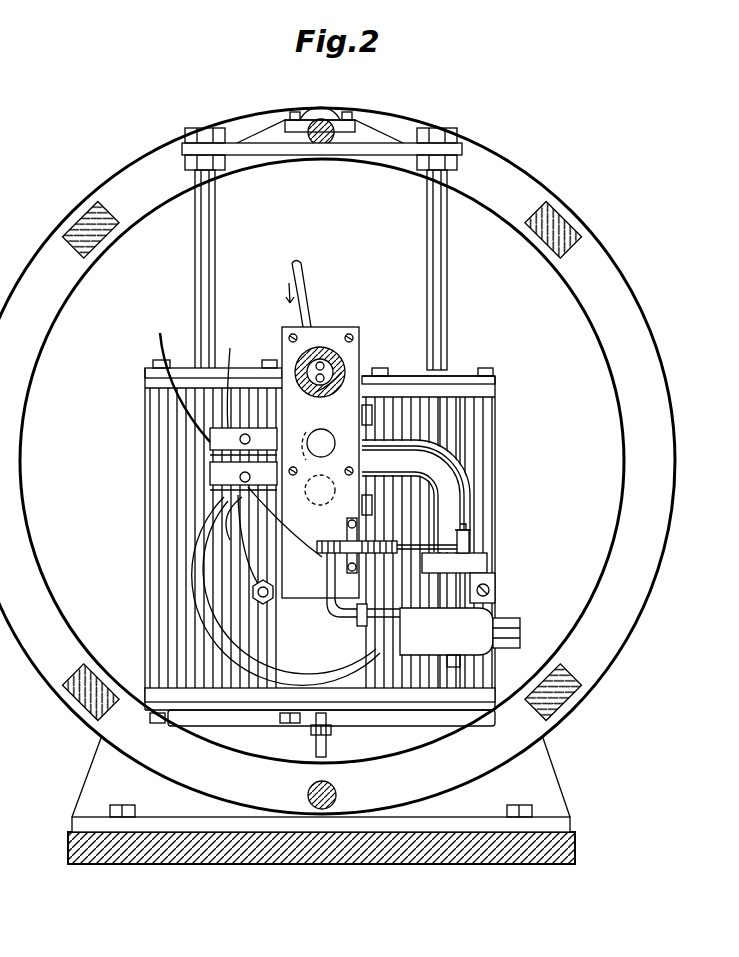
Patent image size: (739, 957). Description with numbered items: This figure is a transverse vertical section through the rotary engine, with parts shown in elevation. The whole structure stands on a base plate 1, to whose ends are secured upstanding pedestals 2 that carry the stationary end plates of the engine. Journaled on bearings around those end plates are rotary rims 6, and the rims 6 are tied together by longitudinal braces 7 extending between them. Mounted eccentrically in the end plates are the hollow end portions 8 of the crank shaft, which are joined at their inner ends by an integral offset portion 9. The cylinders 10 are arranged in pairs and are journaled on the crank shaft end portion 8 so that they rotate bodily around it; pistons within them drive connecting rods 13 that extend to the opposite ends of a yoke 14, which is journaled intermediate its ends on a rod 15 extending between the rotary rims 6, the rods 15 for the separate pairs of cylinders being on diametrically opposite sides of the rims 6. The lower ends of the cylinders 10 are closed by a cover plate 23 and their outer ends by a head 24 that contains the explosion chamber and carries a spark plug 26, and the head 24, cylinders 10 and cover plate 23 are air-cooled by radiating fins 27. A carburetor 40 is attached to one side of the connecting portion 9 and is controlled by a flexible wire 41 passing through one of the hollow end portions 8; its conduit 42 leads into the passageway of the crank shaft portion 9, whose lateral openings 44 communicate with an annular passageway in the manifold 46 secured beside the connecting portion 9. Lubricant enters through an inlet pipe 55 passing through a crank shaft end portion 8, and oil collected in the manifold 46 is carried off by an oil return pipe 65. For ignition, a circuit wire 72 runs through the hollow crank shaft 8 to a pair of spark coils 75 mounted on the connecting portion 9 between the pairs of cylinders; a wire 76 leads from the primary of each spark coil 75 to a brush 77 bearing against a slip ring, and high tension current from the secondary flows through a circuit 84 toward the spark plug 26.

The base plate 1 is at (522, 852).
The pedestals 2 is at (551, 780).
The rims 6 is at (612, 648).
The longitudinal braces 7 is at (78, 214).
The crank shaft end portions 8 is at (336, 374).
The offset portion 9 is at (342, 327).
The cylinders 10 is at (150, 407).
The connecting rods 13 is at (212, 216).
The yoke 14 is at (368, 130).
The rod 15 is at (325, 810).
The cover plate 23 is at (410, 378).
The head 24 is at (213, 712).
The spark plug 26 is at (313, 730).
The radiating fins 27 is at (440, 400).
The carburetor 40 is at (492, 612).
The flexible wire 41 is at (440, 545).
The conduit 42 is at (472, 495).
The lateral openings 44 is at (318, 453).
The manifold 46 is at (192, 560).
The inlet pipe 55 is at (344, 366).
The oil return pipe 65 is at (304, 272).
The electric circuit 72 is at (283, 522).
The spark coils 75 is at (210, 440).
The wire 76 is at (232, 358).
The brush 77 is at (254, 598).
The circuit 84 is at (160, 336).